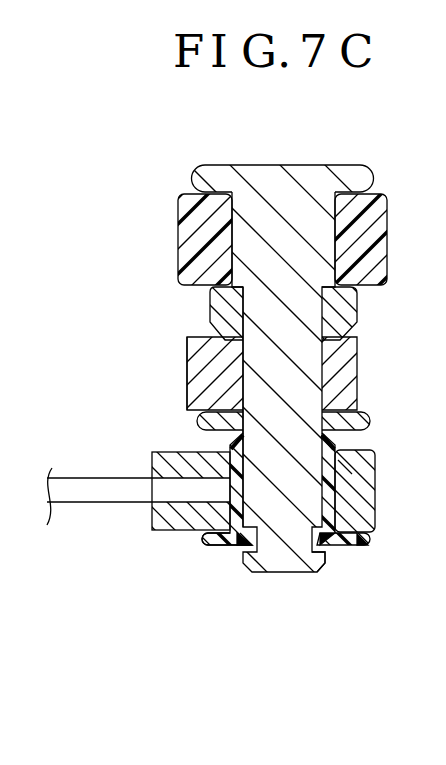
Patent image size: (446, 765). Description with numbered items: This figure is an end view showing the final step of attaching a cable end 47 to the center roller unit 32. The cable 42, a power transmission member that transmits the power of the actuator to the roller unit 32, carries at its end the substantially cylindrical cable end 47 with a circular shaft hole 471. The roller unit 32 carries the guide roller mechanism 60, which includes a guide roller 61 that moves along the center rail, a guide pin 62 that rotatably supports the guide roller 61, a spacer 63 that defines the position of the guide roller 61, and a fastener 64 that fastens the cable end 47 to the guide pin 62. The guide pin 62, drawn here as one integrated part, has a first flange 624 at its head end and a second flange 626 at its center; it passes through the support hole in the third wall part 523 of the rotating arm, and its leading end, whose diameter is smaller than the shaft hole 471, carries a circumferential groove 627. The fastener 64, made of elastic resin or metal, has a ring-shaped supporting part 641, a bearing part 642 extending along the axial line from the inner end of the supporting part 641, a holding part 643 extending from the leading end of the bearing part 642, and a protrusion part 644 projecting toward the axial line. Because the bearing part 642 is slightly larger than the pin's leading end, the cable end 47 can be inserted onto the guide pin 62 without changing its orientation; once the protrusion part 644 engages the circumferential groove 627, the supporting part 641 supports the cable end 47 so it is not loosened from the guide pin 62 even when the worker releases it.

The center roller unit 32 is at (384, 113).
The guide roller mechanism 60 is at (223, 382).
The guide pin 62 is at (332, 163).
The first flange 624 is at (372, 178).
The second flange 626 is at (368, 418).
The circumferential groove 627 is at (323, 549).
The guide roller 61 is at (388, 210).
The spacer 63 is at (358, 303).
The third wall part 523 is at (358, 352).
The fastener 64 is at (223, 382).
The supporting part 641 is at (198, 546).
The bearing part 642 is at (375, 513).
The holding part 643 is at (337, 442).
The protrusion part 644 is at (254, 535).
The shaft hole 471 is at (340, 468).
The cable end 47 is at (176, 452).
The cable 42 is at (92, 505).